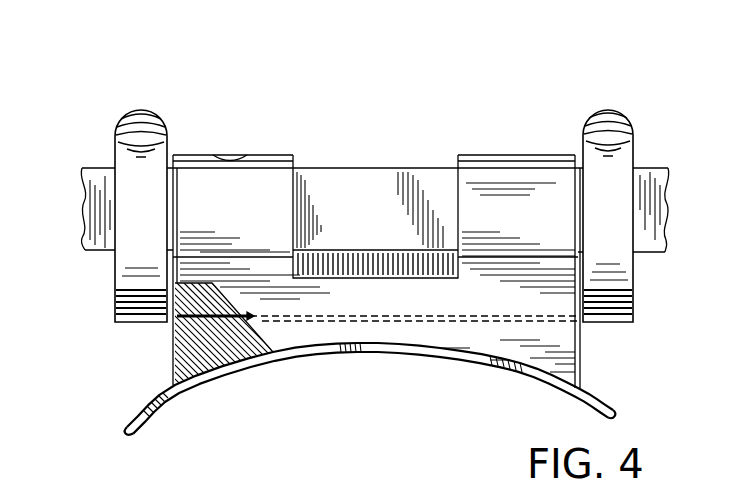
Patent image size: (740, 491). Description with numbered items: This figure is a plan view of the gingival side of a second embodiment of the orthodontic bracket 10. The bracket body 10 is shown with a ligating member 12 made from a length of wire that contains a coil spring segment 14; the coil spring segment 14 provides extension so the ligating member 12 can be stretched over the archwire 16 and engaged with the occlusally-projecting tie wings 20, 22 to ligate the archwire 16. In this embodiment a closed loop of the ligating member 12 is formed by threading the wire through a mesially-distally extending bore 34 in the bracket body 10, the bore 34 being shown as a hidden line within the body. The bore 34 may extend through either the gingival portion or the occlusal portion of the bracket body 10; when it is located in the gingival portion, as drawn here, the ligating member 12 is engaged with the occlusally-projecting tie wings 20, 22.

The orthodontic bracket 10 is at (150, 74).
The ligating member 12 is at (158, 325).
The coil spring segment 14 is at (158, 113).
The archwire 16 is at (364, 224).
The occlusally-projecting tie wing 20 is at (281, 153).
The occlusally-projecting tie wing 22 is at (514, 156).
The mesially-distally extending bore 34 is at (551, 326).